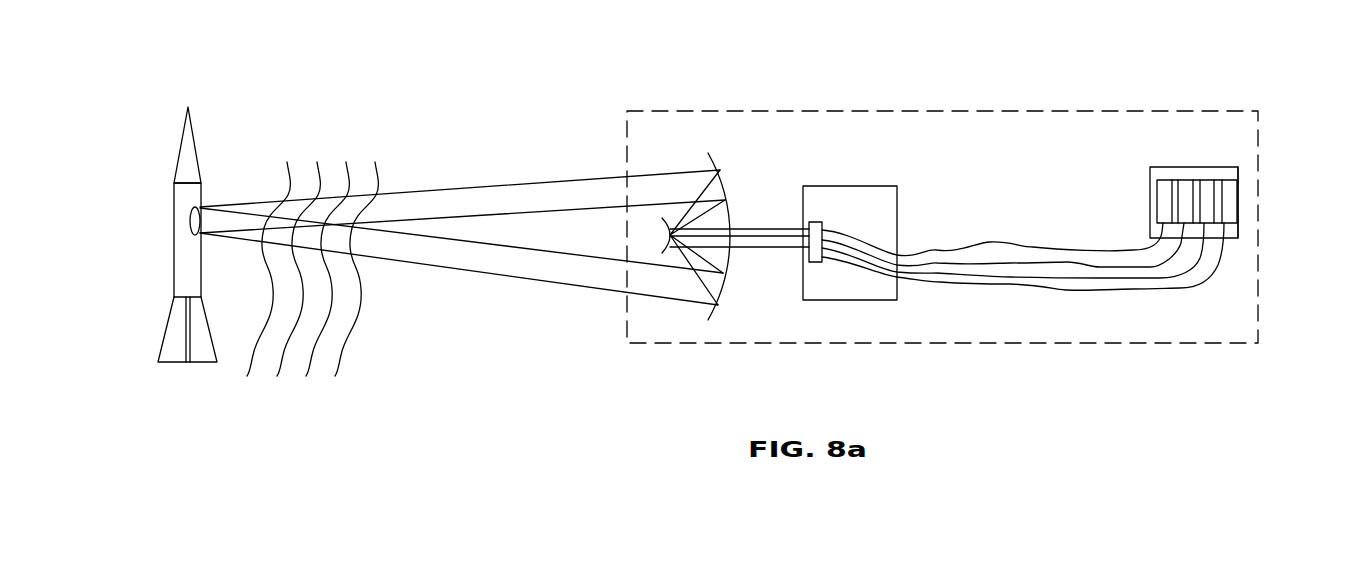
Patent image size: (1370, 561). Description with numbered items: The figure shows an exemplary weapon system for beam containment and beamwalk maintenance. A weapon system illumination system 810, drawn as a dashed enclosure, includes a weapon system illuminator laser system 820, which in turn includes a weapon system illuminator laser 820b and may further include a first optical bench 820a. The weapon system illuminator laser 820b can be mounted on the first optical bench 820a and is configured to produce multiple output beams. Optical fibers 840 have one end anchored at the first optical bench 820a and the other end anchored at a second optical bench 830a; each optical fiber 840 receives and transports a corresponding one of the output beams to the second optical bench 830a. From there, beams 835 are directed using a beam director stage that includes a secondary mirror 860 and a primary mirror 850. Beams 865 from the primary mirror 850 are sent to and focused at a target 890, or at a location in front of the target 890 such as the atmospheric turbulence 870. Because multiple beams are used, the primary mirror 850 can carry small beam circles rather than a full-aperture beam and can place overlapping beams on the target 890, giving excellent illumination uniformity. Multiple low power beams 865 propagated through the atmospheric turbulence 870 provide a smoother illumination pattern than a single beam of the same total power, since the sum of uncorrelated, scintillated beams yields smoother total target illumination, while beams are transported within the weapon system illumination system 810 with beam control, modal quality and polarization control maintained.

The weapon system illumination system 810 is at (1177, 111).
The weapon system illuminator laser system 820 is at (1160, 167).
The first optical bench 820a is at (1157, 178).
The weapon system illuminator laser 820b is at (1238, 188).
The second optical bench 830a is at (890, 203).
The beams 835 is at (766, 260).
The optical fibers 840 is at (1240, 271).
The primary mirror 850 is at (722, 176).
The secondary mirror 860 is at (663, 236).
The beams 865 is at (548, 172).
The atmospheric turbulence 870 is at (301, 406).
The target 890 is at (183, 234).